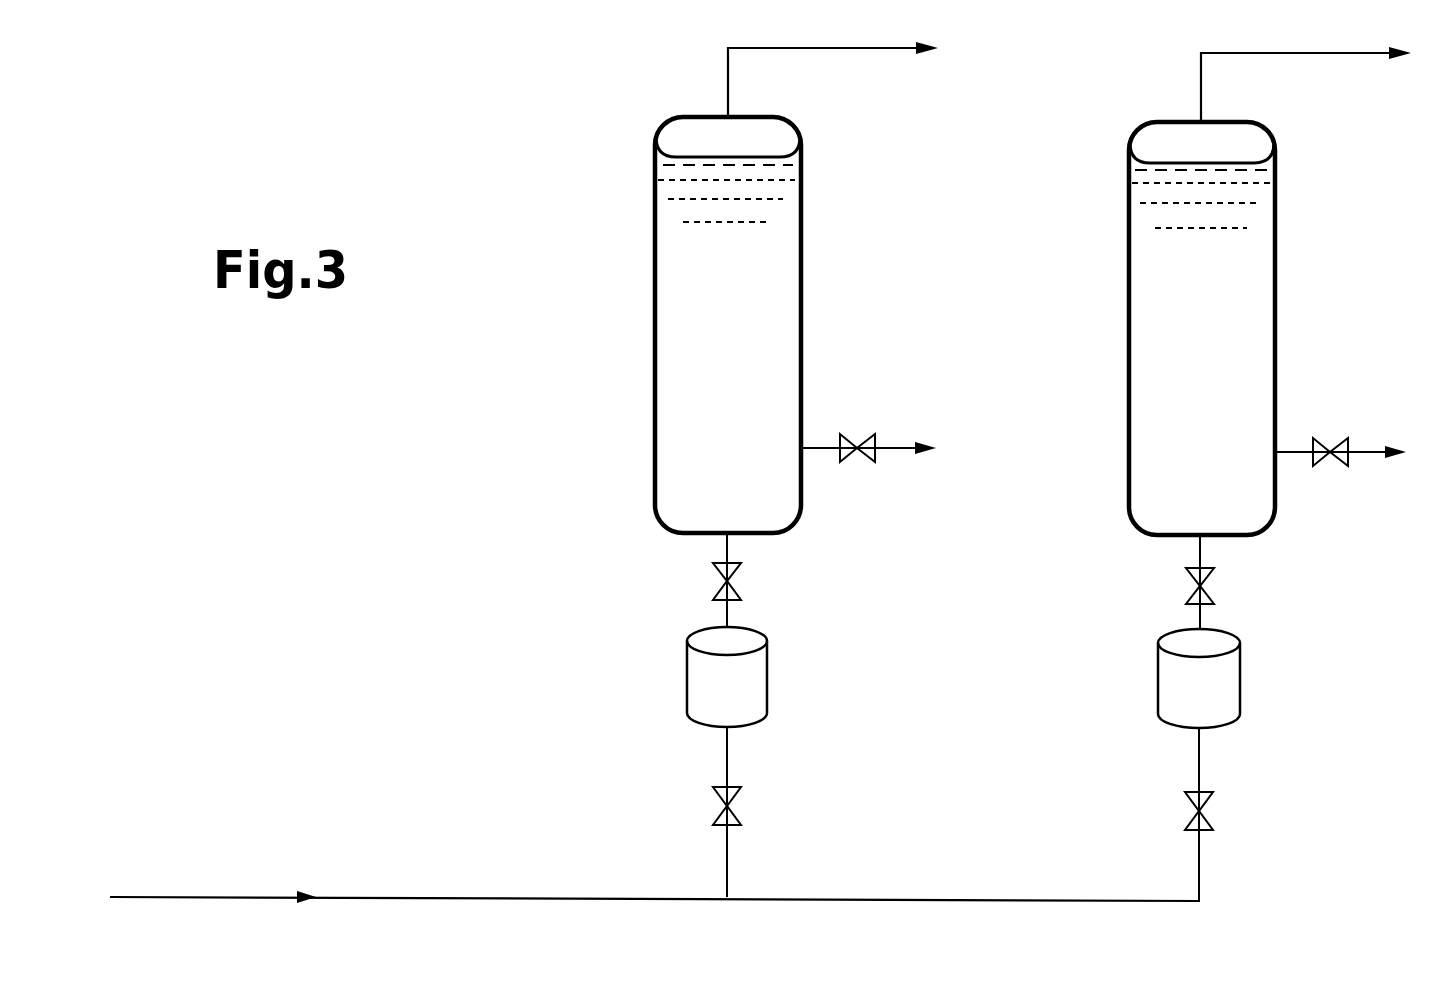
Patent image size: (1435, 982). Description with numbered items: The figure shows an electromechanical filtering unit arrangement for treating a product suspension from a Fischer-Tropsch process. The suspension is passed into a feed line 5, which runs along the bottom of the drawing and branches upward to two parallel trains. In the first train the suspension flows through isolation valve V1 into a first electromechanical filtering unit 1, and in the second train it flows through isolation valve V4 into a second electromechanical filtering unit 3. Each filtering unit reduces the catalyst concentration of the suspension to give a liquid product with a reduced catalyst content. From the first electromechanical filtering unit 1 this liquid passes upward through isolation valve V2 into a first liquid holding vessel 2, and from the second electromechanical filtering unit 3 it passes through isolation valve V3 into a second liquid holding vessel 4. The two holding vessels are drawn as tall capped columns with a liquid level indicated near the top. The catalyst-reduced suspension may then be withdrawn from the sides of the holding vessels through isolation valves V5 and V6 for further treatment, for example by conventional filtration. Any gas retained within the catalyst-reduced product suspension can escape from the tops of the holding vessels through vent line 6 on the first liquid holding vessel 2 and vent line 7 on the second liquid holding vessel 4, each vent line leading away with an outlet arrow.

The first electromechanical filtering unit 1 is at (702, 678).
The first liquid holding vessel 2 is at (655, 400).
The second electromechanical filtering unit 3 is at (1217, 682).
The second liquid holding vessel 4 is at (1275, 278).
The line 5 is at (447, 897).
The vent line 6 is at (728, 86).
The vent line 7 is at (1201, 80).
The isolation valve V1 is at (749, 812).
The isolation valve V2 is at (749, 580).
The isolation valve V3 is at (1223, 582).
The isolation valve V4 is at (1222, 814).
The isolation valve V5 is at (868, 468).
The isolation valve V6 is at (1340, 472).